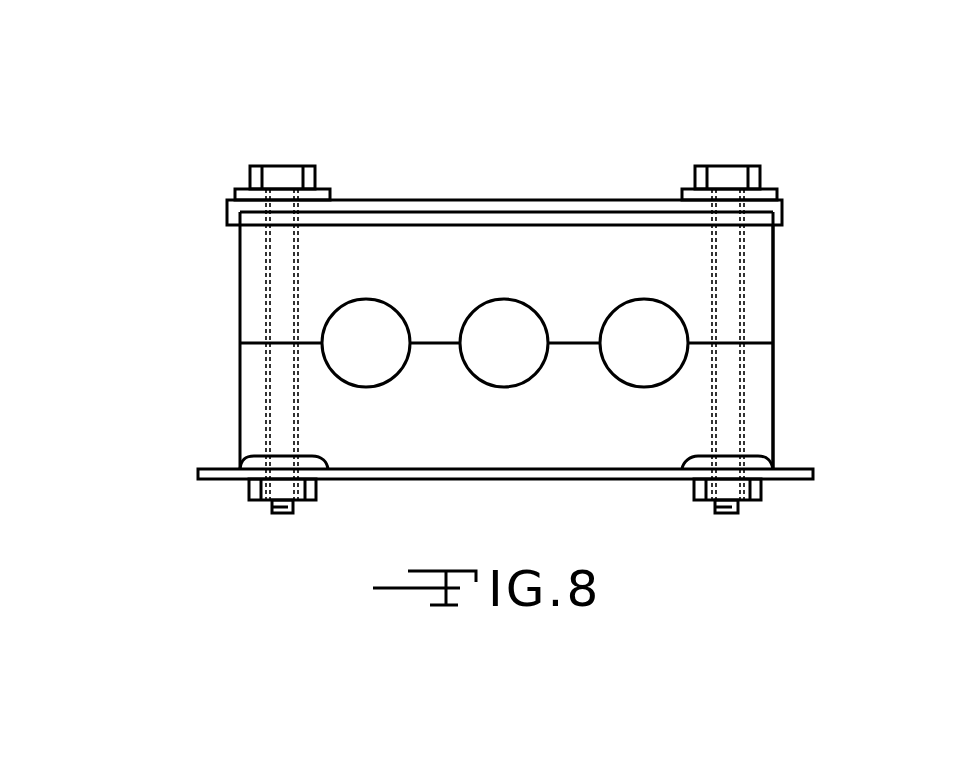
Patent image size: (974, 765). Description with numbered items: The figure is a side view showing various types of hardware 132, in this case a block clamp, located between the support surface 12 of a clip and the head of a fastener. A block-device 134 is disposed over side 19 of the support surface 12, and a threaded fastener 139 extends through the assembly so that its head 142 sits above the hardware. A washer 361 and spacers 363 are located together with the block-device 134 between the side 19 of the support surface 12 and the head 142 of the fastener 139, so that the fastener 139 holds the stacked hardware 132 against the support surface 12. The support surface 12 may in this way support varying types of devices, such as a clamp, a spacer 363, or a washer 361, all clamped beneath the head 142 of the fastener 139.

The hardware 132 is at (818, 354).
The block-device 134 is at (462, 169).
The threaded fastener 139 is at (284, 166).
The head end 142 is at (265, 166).
The washer 361 is at (331, 190).
The spacers 363 is at (773, 362).
The side 19 is at (496, 443).
The support surface 12 is at (252, 458).